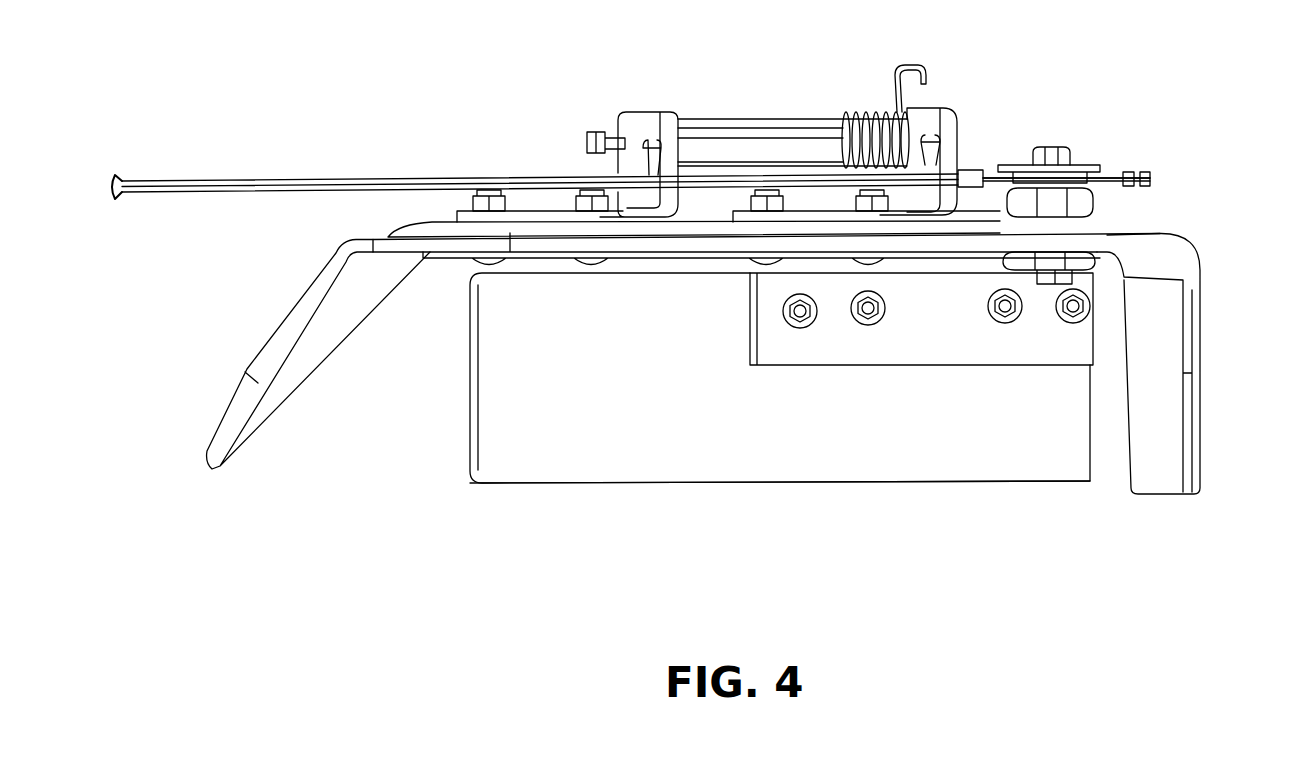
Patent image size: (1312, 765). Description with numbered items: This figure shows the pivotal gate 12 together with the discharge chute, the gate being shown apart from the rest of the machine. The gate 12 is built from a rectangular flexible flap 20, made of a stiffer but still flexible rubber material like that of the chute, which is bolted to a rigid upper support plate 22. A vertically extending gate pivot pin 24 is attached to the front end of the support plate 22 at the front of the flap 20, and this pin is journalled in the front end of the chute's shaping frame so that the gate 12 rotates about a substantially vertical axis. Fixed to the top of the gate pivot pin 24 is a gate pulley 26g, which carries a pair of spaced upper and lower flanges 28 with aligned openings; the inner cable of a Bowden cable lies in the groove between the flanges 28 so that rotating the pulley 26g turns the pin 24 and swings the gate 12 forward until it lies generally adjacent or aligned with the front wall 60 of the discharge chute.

The gate 12 is at (819, 500).
The flexible flap 20 is at (548, 438).
The upper support plate 22 is at (905, 335).
The gate pivot pin 24 is at (1053, 148).
The gate pulley 26g is at (1012, 143).
The upper and lower flanges 28 is at (1100, 168).
The front wall 60 is at (1183, 350).